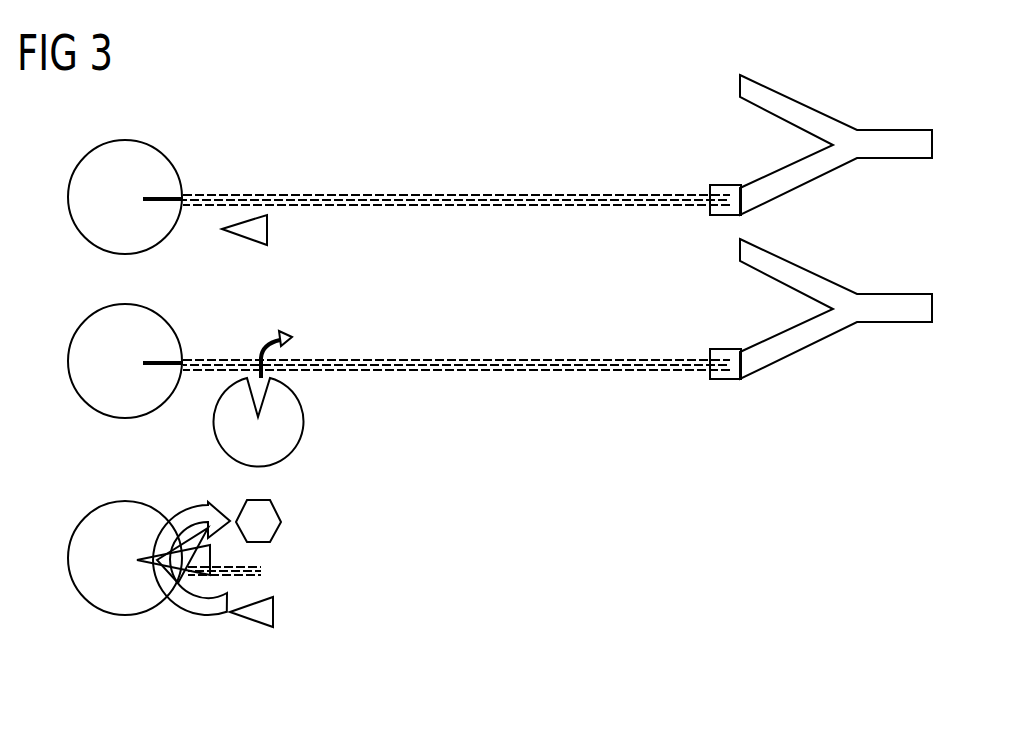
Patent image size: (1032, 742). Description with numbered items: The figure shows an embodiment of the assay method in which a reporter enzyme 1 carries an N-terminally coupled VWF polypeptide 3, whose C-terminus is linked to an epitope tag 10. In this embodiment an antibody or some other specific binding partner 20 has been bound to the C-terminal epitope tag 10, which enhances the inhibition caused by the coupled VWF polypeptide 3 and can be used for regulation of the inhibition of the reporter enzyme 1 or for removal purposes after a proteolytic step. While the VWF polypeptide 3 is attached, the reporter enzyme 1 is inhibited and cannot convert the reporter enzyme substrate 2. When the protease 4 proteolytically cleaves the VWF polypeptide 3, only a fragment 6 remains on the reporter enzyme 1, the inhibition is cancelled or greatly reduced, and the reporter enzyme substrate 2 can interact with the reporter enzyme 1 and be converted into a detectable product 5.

The reporter enzyme 1 is at (67, 199).
The reporter enzyme substrate 2 is at (268, 229).
The VWF polypeptide 3 is at (507, 194).
The ADAMTS-13 4 is at (303, 421).
The detectable product 5 is at (282, 515).
The fragment 6 is at (247, 562).
The epitope tag 10 is at (727, 216).
The antibody or other specific binding partner 20 is at (893, 159).